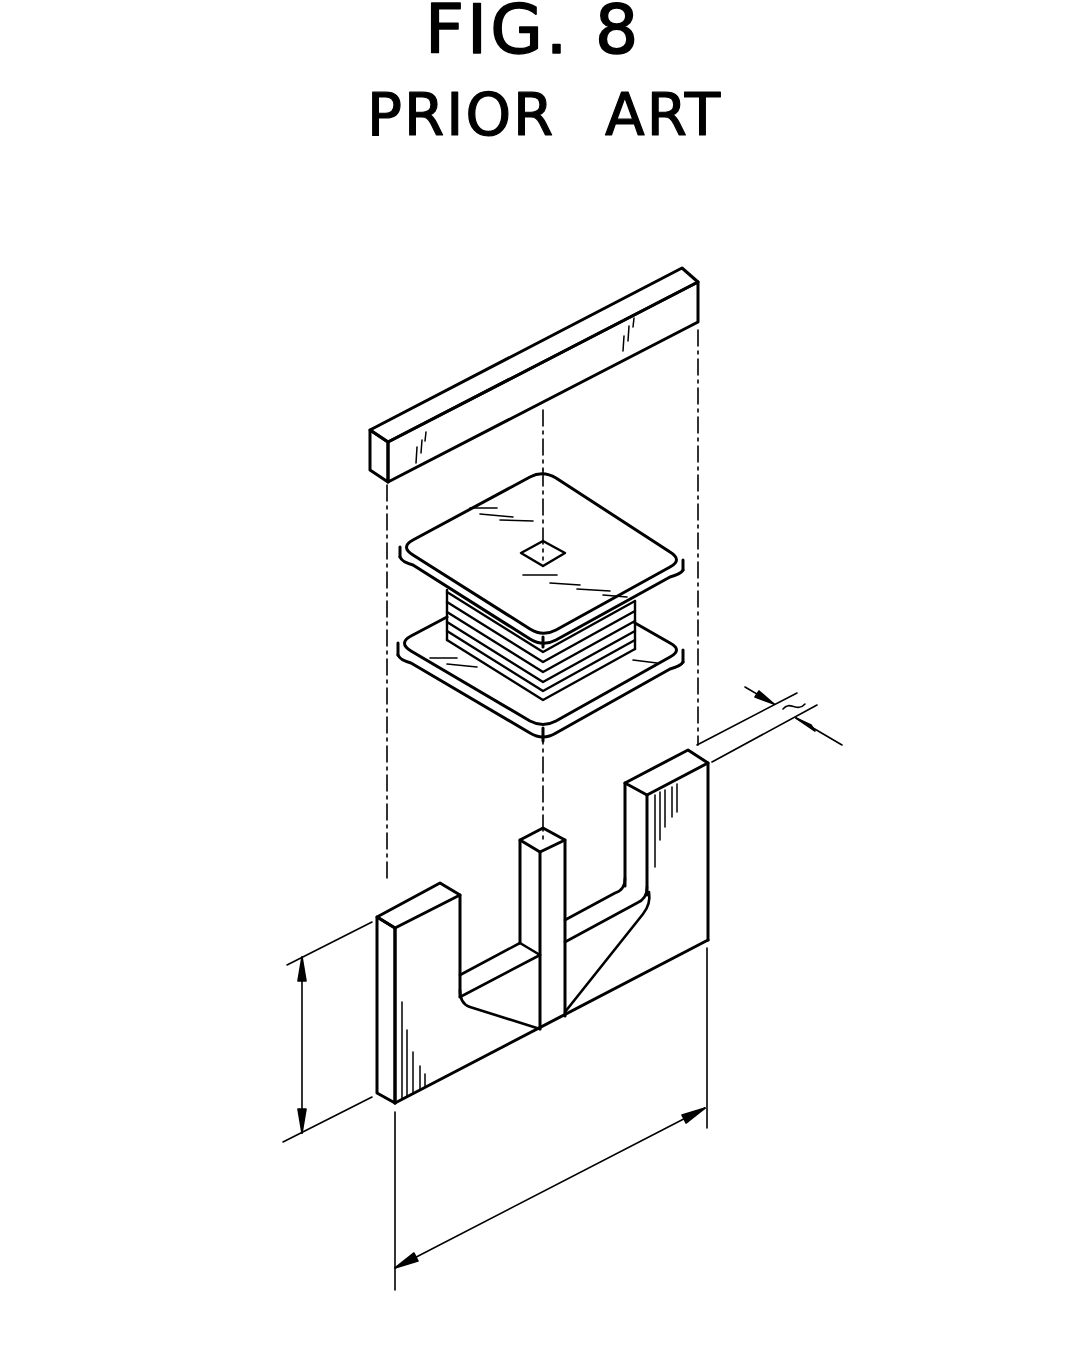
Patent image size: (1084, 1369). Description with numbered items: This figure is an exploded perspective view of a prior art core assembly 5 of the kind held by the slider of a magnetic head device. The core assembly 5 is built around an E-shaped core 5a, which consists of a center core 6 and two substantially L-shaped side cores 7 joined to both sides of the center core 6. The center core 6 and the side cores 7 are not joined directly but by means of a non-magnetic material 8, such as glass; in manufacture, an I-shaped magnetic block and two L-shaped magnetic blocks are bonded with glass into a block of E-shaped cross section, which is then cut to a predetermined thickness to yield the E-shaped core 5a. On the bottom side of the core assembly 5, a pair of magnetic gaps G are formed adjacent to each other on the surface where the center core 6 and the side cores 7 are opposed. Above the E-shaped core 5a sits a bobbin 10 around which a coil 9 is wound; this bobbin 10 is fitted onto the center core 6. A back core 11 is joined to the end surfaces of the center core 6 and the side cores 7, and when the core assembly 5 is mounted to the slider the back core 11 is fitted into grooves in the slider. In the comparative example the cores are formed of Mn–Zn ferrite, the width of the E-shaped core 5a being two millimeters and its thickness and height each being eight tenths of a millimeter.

The core assembly 5 is at (313, 565).
The E-shaped core 5a is at (712, 898).
The center core 6 is at (550, 882).
The side cores 7 is at (427, 927).
The non-magnetic material 8 is at (495, 1002).
The coil 9 is at (673, 633).
The bobbin 10 is at (628, 543).
The back core 11 is at (683, 308).
The magnetic gaps G is at (566, 1012).